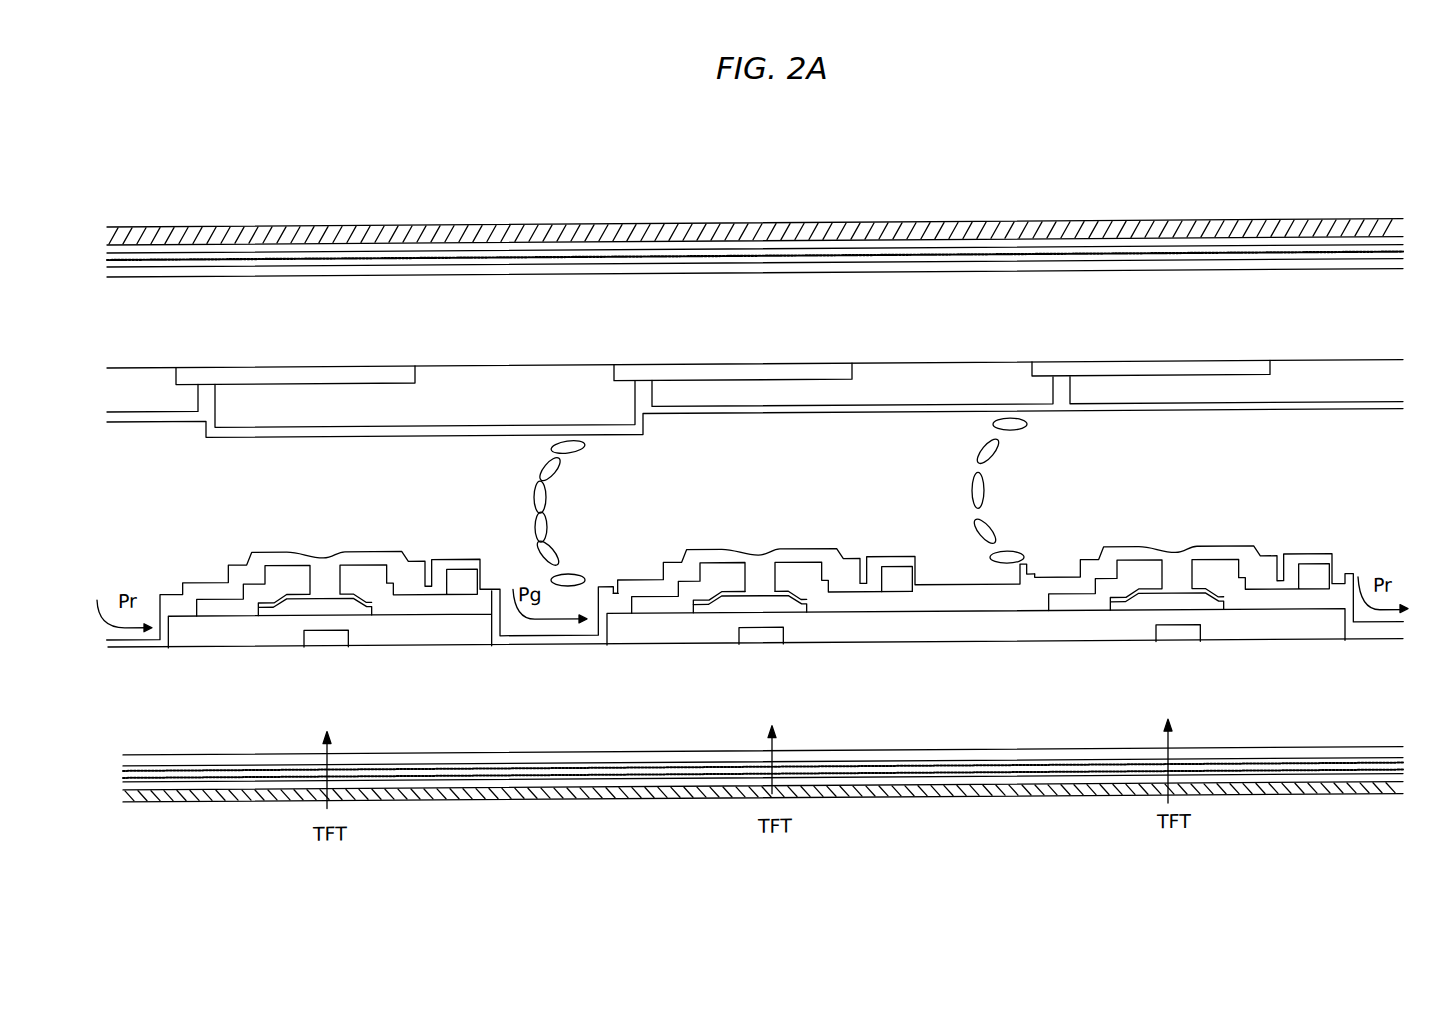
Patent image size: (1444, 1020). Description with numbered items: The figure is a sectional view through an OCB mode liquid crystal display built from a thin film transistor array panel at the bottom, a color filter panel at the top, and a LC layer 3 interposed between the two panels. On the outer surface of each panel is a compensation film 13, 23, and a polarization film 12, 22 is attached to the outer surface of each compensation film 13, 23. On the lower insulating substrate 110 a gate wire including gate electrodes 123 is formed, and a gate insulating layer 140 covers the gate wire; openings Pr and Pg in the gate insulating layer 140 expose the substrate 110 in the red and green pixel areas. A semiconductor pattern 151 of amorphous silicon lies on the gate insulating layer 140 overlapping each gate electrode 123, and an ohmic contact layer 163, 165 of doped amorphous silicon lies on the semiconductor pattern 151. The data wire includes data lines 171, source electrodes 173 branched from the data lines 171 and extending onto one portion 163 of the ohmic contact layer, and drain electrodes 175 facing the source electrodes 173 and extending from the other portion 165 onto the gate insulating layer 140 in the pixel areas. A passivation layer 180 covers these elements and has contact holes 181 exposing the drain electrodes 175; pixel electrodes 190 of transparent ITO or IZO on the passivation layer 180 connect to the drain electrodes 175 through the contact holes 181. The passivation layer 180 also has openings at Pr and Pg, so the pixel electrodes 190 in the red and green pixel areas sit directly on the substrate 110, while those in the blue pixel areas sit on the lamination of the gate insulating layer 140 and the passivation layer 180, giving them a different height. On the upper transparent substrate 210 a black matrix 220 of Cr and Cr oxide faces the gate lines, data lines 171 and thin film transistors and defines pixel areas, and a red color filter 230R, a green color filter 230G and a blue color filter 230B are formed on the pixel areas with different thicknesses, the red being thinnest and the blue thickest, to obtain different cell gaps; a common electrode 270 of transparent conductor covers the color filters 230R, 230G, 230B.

The LC layer 3 is at (1385, 487).
The polarization film 12 is at (382, 802).
The compensation film 13 is at (543, 773).
The polarization film 22 is at (610, 233).
The compensation film 23 is at (517, 253).
The insulating substrate 110 is at (1080, 725).
The gate electrode 123 is at (762, 635).
The gate insulating layer 140 is at (443, 637).
The semiconductor pattern 151 is at (748, 592).
The ohmic contact layer 163 is at (703, 612).
The ohmic contact layer 165 is at (820, 598).
The data line 171 is at (663, 682).
The source electrode 173 is at (718, 568).
The drain electrode 175 is at (877, 607).
The passivation layer 180 is at (993, 603).
The contact hole 181 is at (872, 558).
The pixel electrode 190 is at (943, 587).
The second insulating substrate 210 is at (810, 292).
The black matrix 220 is at (307, 377).
The green color filter 230G is at (462, 390).
The blue color filter 230B is at (907, 388).
The red color filter 230R is at (1337, 383).
The common electrode 270 is at (1235, 403).